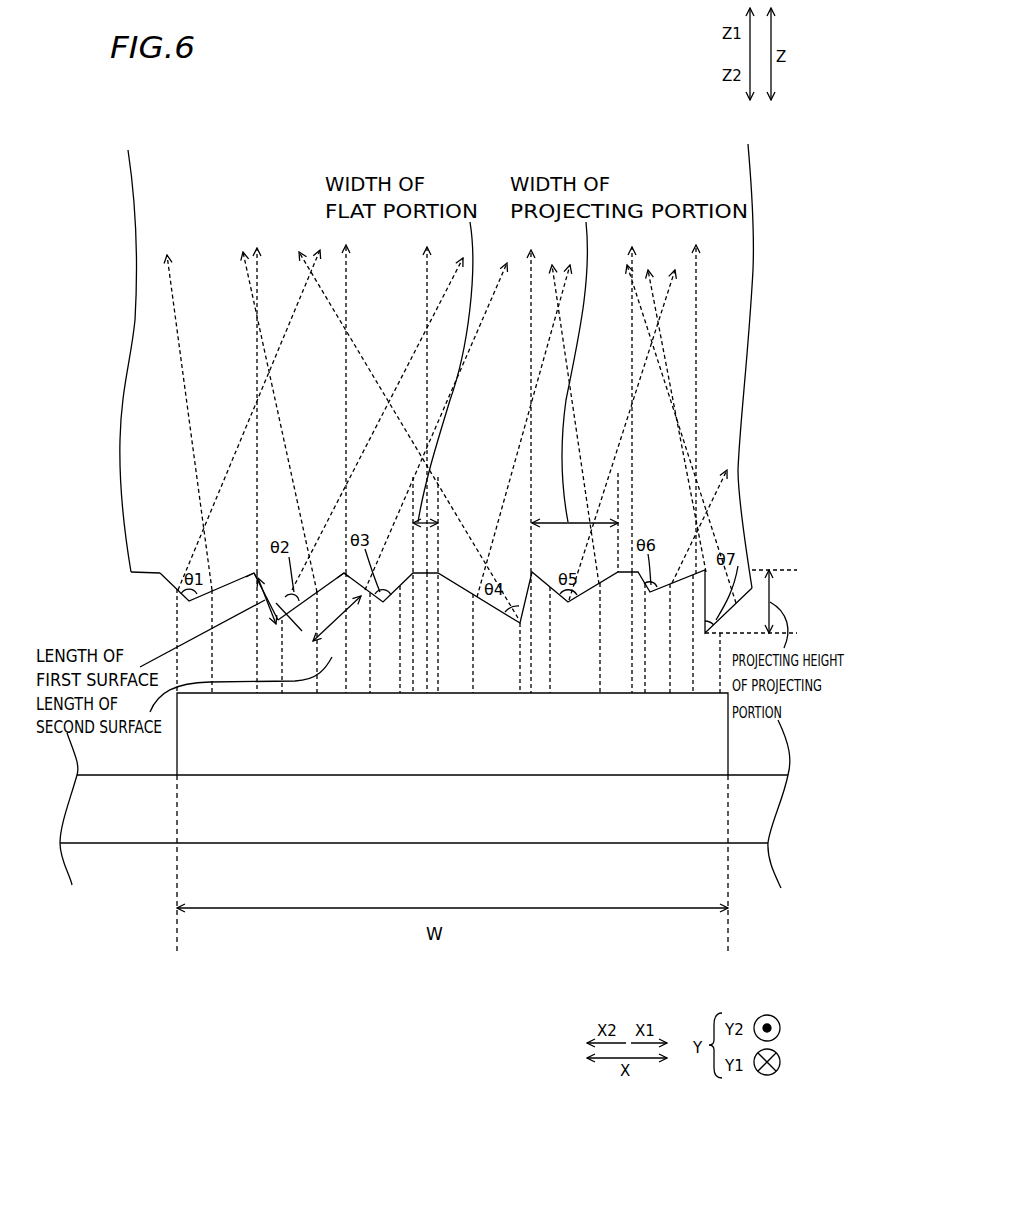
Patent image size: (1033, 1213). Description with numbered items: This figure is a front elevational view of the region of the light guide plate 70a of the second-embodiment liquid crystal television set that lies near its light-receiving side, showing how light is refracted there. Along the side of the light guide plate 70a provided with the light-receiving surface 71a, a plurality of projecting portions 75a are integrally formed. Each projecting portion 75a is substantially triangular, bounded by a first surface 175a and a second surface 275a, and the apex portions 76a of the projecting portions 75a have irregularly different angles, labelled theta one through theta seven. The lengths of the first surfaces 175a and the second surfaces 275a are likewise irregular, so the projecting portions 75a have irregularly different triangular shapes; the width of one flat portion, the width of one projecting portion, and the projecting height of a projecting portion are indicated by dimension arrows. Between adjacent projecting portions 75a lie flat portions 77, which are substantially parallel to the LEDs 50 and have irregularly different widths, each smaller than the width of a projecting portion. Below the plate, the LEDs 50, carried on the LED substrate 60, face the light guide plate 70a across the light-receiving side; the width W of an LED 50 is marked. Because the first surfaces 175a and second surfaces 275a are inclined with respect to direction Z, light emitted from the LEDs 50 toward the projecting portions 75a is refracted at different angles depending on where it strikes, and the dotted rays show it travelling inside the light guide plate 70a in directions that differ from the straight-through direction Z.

The light guide plate 70a is at (405, 395).
The flat portion 71a is at (128, 571).
The projecting portions 75a is at (255, 575).
The apex portions 76a is at (272, 585).
The flat portions 77 is at (200, 609).
The first surfaces 175a is at (270, 569).
The second surfaces 275a is at (329, 572).
The LEDs 50 is at (177, 744).
The LED substrate 60 is at (143, 843).